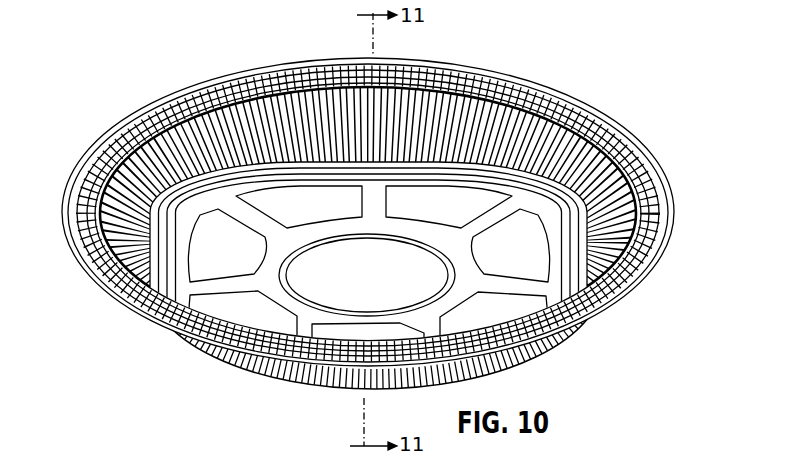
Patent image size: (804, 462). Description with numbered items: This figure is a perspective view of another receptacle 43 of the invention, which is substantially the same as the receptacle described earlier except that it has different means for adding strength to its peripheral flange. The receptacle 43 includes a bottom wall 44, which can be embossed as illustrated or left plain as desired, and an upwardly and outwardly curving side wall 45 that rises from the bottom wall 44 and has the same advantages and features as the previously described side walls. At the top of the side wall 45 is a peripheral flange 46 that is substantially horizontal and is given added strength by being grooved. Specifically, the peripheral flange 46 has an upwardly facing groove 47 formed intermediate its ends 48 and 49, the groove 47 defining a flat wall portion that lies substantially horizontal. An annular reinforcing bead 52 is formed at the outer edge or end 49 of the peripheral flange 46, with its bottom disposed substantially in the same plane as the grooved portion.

The receptacle 43 is at (576, 57).
The bottom wall 44 is at (337, 333).
The side wall 45 is at (640, 204).
The peripheral flange 46 is at (639, 156).
The groove 47 is at (148, 110).
The end of peripheral flange 48 is at (103, 137).
The outer end of peripheral flange 49 is at (90, 152).
The annular reinforcing bead 52 is at (68, 204).